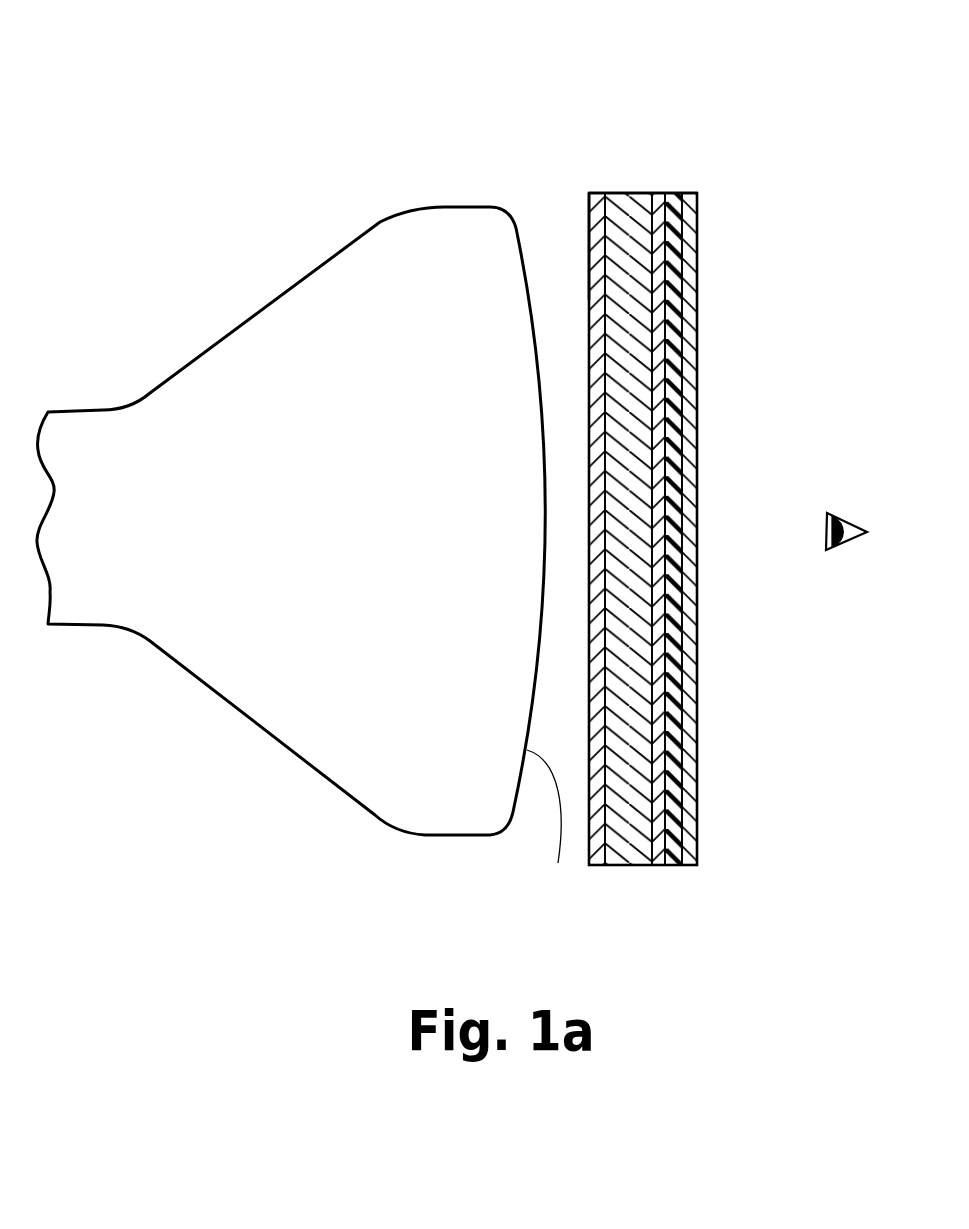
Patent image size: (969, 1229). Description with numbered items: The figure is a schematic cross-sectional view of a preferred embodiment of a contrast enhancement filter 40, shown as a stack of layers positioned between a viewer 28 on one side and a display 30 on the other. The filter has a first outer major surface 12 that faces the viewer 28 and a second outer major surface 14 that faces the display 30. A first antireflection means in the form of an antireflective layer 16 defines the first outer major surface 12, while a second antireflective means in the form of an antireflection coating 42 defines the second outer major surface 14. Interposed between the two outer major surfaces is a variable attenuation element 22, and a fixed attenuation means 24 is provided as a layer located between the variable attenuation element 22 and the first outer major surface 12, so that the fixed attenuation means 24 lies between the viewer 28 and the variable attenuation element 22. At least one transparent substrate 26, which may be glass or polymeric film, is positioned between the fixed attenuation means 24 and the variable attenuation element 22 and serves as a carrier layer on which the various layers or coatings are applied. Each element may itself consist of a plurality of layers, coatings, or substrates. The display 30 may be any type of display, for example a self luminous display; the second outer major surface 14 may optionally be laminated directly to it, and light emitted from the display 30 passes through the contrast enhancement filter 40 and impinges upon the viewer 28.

The first outer major surface 12 is at (654, 513).
The second outer major surface 14 is at (589, 268).
The antireflective layer 16 is at (693, 865).
The variable attenuation element 22 is at (630, 220).
The fixed attenuation means 24 is at (670, 865).
The transparent substrate 26 is at (660, 207).
The viewer 28 is at (850, 538).
The display 30 is at (551, 826).
The contrast enhancement filter 40 is at (590, 104).
The antireflection coating 42 is at (598, 193).